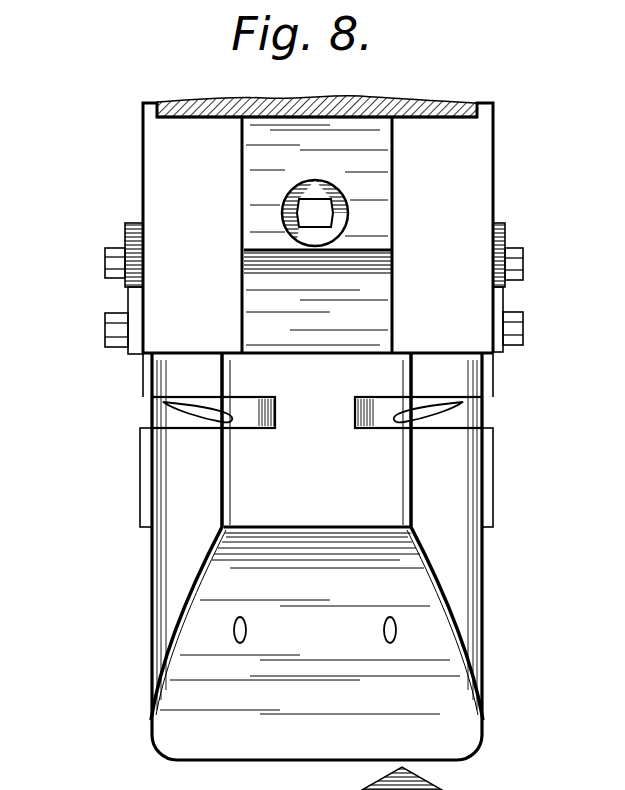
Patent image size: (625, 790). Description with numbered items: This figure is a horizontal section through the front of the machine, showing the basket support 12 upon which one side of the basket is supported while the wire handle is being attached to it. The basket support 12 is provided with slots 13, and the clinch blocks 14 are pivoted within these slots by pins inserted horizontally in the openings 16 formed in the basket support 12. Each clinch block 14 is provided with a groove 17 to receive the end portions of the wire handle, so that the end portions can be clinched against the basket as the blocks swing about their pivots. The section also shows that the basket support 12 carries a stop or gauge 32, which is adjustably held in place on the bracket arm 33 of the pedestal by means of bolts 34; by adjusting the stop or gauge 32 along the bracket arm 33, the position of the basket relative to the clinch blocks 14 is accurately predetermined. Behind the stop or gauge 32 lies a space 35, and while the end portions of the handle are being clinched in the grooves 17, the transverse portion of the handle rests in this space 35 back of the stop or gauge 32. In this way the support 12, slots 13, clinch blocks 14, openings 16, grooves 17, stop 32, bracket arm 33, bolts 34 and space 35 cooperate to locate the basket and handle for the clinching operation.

The basket support 12 is at (467, 582).
The slots 13 is at (210, 395).
The clinch blocks 14 is at (150, 422).
The openings 16 is at (235, 630).
The groove 17 is at (200, 412).
The stop or gauge 32 is at (104, 329).
The bracket arm 33 is at (470, 198).
The bolts 34 is at (107, 313).
The space 35 is at (367, 299).